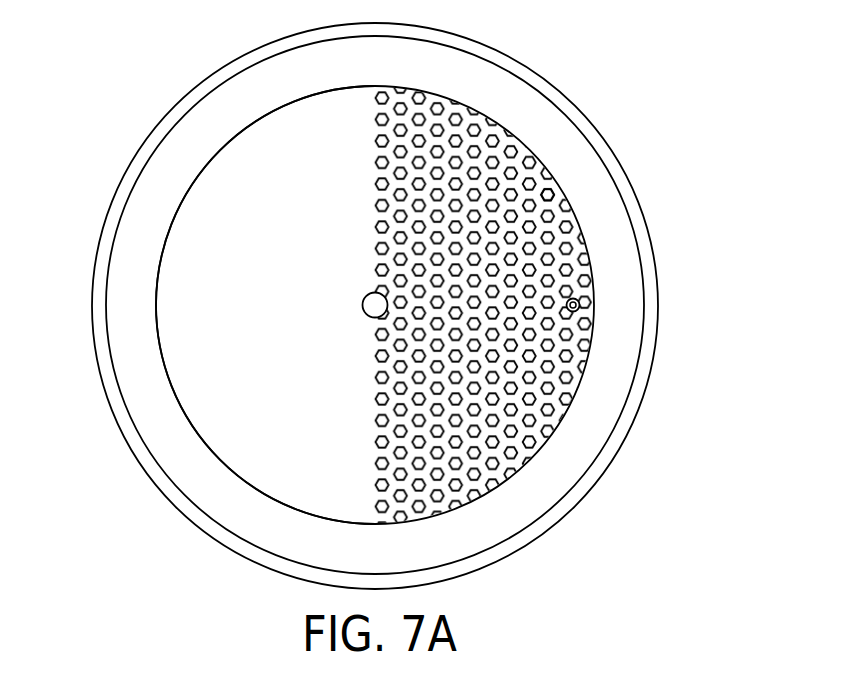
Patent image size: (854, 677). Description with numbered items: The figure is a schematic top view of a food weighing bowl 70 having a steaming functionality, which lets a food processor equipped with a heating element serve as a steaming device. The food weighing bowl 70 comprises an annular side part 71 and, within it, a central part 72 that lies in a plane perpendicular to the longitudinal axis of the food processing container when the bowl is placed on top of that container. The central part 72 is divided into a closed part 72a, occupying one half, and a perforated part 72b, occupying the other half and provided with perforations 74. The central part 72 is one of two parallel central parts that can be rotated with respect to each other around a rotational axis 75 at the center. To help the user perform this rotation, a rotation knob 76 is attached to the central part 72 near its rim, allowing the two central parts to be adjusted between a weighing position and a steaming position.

The food weighing bowl 70 is at (693, 76).
The annular side part 71 is at (132, 257).
The central part 72 is at (298, 392).
The closed part 72a is at (303, 140).
The perforated part 72b is at (445, 138).
The perforations 74 is at (550, 193).
The rotational axis 75 is at (362, 303).
The rotation knob 76 is at (580, 305).